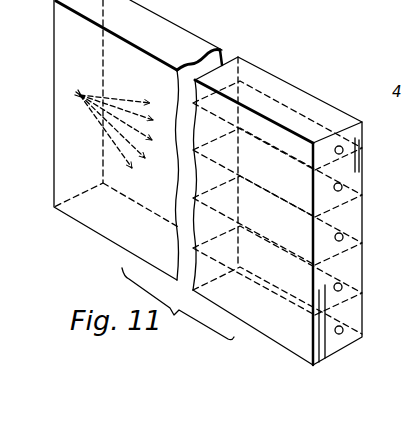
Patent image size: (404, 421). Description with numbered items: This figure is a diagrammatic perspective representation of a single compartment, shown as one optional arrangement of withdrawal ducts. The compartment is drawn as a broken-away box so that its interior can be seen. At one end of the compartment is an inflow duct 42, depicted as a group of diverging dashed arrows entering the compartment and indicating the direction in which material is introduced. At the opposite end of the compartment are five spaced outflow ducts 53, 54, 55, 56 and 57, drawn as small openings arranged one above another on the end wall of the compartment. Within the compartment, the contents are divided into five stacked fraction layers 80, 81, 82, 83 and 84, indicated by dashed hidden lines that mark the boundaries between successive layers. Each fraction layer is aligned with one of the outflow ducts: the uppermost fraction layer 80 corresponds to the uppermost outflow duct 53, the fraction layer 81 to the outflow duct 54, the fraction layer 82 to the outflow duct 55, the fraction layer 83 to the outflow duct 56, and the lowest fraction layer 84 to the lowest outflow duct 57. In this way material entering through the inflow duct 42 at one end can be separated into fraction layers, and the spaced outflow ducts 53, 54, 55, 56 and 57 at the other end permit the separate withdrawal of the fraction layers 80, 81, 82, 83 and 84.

The inflow duct 42 is at (77, 96).
The outflow duct 53 is at (343, 148).
The outflow duct 54 is at (342, 185).
The outflow duct 55 is at (343, 235).
The outflow duct 56 is at (342, 285).
The outflow duct 57 is at (343, 328).
The fraction layer 80 is at (268, 141).
The fraction layer 81 is at (269, 183).
The fraction layer 82 is at (272, 230).
The fraction layer 83 is at (274, 275).
The fraction layer 84 is at (268, 323).